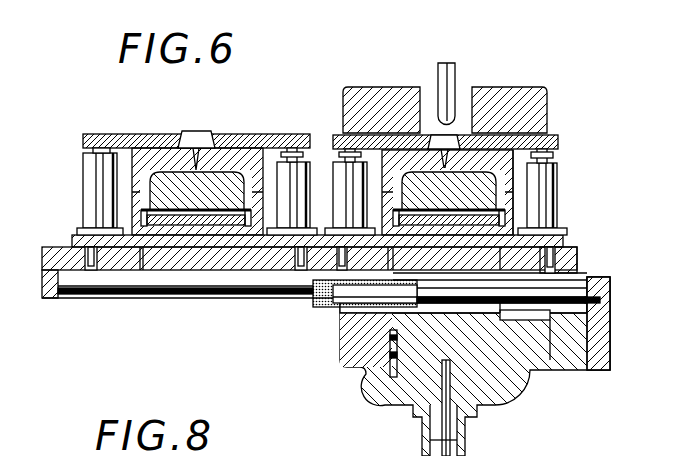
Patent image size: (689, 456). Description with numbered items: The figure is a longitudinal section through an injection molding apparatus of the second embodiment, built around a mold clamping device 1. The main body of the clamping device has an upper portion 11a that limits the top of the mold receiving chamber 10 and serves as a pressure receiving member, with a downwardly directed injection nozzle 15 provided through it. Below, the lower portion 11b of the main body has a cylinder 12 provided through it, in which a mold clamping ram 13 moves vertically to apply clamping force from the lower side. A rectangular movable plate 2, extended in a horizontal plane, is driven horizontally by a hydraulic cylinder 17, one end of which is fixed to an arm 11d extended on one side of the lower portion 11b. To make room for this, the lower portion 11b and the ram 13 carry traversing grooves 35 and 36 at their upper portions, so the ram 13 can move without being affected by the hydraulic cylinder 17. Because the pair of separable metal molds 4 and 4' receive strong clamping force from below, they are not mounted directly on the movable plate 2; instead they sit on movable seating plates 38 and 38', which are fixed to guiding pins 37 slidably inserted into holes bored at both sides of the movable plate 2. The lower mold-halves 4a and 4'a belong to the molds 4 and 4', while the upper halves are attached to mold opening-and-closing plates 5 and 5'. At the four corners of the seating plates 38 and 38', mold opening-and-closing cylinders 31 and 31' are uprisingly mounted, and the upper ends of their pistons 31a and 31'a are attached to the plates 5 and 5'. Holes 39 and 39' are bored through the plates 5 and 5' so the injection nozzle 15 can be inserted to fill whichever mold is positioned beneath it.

The mold clamping device 1 is at (527, 394).
The movable plate 2 is at (48, 248).
The separable mold 4 is at (152, 191).
The lower mold-half 4a is at (218, 226).
The separable mold 4' is at (489, 192).
The lower mold-half 4'a is at (509, 186).
The mold opening-and-closing plate 5 is at (196, 125).
The mold opening-and-closing plate 5' is at (445, 103).
The mold receiving chamber 10 is at (518, 193).
The upper portion of the main body 11a is at (378, 95).
The lower portion of the main body 11b is at (375, 373).
The arm 11d is at (605, 290).
The cylinder 12 is at (390, 343).
The mold clamping ram 13 is at (487, 400).
The injection nozzle 15 is at (440, 103).
The hydraulic cylinder 17 is at (560, 290).
The mold opening-and-closing cylinder 31 is at (175, 169).
The piston 31a is at (93, 151).
The mold opening-and-closing cylinder 31' is at (462, 177).
The piston 31'a is at (460, 115).
The traversing groove 35 is at (400, 307).
The traversing groove 36 is at (533, 312).
The guiding pin 37 is at (97, 275).
The movable seating plate 38 is at (320, 290).
The movable seating plate 38' is at (605, 222).
The hole for inserting injection nozzle 39 is at (193, 125).
The hole for inserting injection nozzle 39' is at (466, 115).